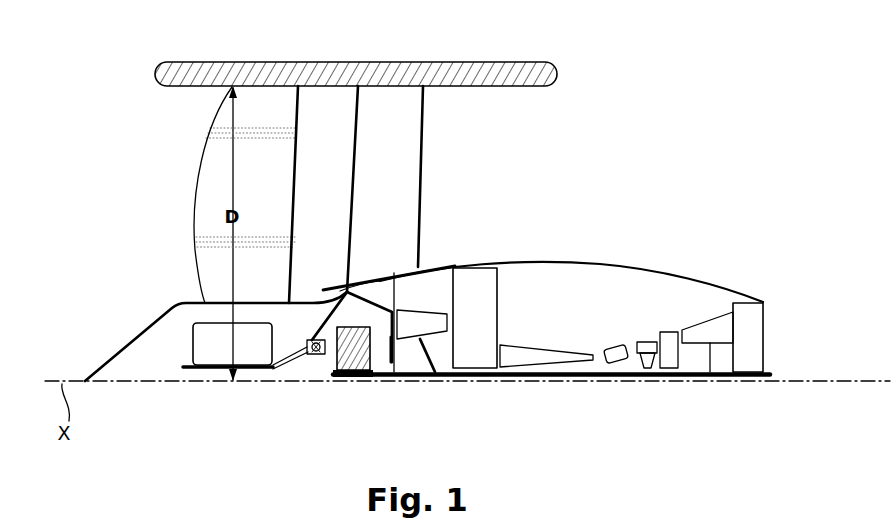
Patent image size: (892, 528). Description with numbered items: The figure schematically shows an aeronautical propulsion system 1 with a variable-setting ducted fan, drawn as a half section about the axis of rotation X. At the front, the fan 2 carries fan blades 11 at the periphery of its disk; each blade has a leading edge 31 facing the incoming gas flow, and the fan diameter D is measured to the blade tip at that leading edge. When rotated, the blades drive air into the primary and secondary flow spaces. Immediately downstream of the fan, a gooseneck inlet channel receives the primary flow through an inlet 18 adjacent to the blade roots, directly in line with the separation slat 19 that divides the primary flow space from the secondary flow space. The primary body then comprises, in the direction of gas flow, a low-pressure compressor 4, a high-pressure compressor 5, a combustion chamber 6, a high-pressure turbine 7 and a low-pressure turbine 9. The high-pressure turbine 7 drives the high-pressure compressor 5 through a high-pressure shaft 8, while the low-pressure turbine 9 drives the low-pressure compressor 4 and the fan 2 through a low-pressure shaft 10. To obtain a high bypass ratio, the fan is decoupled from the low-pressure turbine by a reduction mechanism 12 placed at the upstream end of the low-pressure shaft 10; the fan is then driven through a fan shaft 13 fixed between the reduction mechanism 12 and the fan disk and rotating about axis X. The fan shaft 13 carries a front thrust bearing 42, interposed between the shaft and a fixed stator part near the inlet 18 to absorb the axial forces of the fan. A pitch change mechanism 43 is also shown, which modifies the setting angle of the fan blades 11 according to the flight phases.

The propulsion system 1 is at (661, 253).
The fan 2 is at (146, 270).
The leading edge 31 is at (199, 135).
The fan blades 11 is at (335, 194).
The inlet 18 is at (316, 297).
The separation slat 19 is at (336, 289).
The low-pressure compressor 4 is at (422, 341).
The high-pressure compressor 5 is at (546, 357).
The low-pressure turbine 9 is at (707, 342).
The pitch change mechanism 43 is at (210, 345).
The front bearing 42 is at (311, 378).
The reduction mechanism 12 is at (355, 378).
The low-pressure shaft 10 is at (395, 378).
The fan shaft 13 is at (212, 371).
The high-pressure shaft 8 is at (575, 364).
The combustion chamber 6 is at (610, 380).
The high-pressure turbine 7 is at (653, 380).